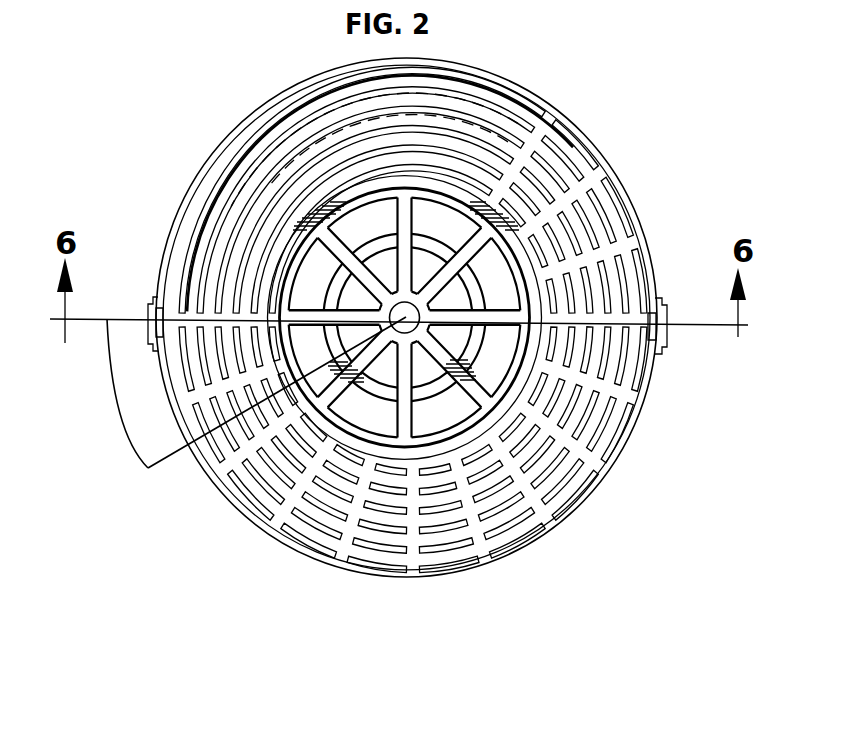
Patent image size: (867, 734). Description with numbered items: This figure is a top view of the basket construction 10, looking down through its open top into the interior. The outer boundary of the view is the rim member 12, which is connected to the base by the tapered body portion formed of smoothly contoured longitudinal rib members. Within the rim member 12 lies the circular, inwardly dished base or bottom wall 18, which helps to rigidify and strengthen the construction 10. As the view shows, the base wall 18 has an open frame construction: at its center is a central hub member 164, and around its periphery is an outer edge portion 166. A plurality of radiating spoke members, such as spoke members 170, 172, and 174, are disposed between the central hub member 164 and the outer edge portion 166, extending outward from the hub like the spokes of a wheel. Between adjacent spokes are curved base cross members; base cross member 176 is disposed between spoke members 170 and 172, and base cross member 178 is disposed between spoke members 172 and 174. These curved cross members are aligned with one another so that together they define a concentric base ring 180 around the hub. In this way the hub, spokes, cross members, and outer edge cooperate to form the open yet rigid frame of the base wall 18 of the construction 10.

The construction 10 is at (158, 128).
The rim member 12 is at (630, 434).
The base or bottom wall 18 is at (455, 226).
The central hub member 164 is at (423, 312).
The outer edge portion 166 is at (560, 492).
The spoke member 170 is at (372, 212).
The spoke member 172 is at (318, 212).
The spoke member 174 is at (333, 282).
The base cross member 176 is at (340, 204).
The base cross member 178 is at (320, 232).
The concentric base ring 180 is at (362, 409).